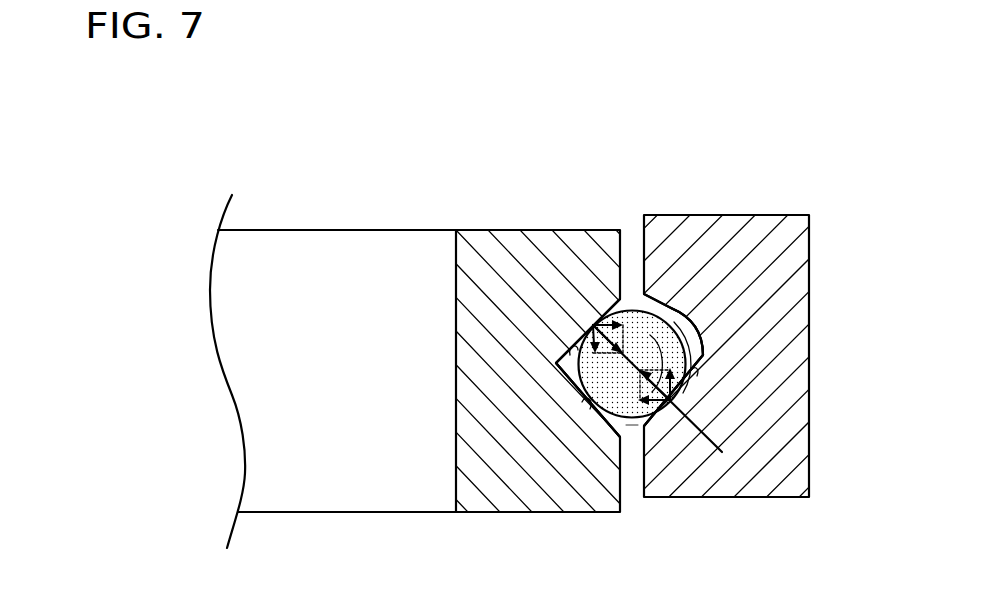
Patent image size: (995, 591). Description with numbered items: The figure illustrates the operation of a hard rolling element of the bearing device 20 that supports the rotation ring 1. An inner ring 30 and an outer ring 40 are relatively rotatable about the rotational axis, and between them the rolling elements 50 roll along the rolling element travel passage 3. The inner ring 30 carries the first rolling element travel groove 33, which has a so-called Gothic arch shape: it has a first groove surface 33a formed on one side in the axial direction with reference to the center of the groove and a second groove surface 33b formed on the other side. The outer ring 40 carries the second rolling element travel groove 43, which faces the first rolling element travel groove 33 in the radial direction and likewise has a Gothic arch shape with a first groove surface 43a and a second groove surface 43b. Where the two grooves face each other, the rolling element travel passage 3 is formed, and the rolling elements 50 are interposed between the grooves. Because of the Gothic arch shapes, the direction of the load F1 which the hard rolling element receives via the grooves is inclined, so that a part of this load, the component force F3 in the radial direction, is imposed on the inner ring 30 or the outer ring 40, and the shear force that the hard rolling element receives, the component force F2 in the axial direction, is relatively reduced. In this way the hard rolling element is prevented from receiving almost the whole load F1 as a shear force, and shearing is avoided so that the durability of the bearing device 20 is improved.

The rotation ring 1 is at (334, 186).
The bearing device 20 is at (402, 206).
The inner ring 30 is at (530, 262).
The first rolling element travel groove 33 is at (392, 355).
The first groove surface 33a is at (568, 338).
The second groove surface 33b is at (592, 416).
The outer ring 40 is at (708, 245).
The second rolling element travel groove 43 is at (880, 275).
The first groove surface 43a is at (674, 326).
The second groove surface 43b is at (679, 375).
The rolling element travel passage 3 is at (632, 289).
The rolling elements 50 is at (627, 432).
The load F1 is at (590, 346).
The component force in the axial direction F2 is at (620, 352).
The component force in the radial direction F3 is at (593, 325).